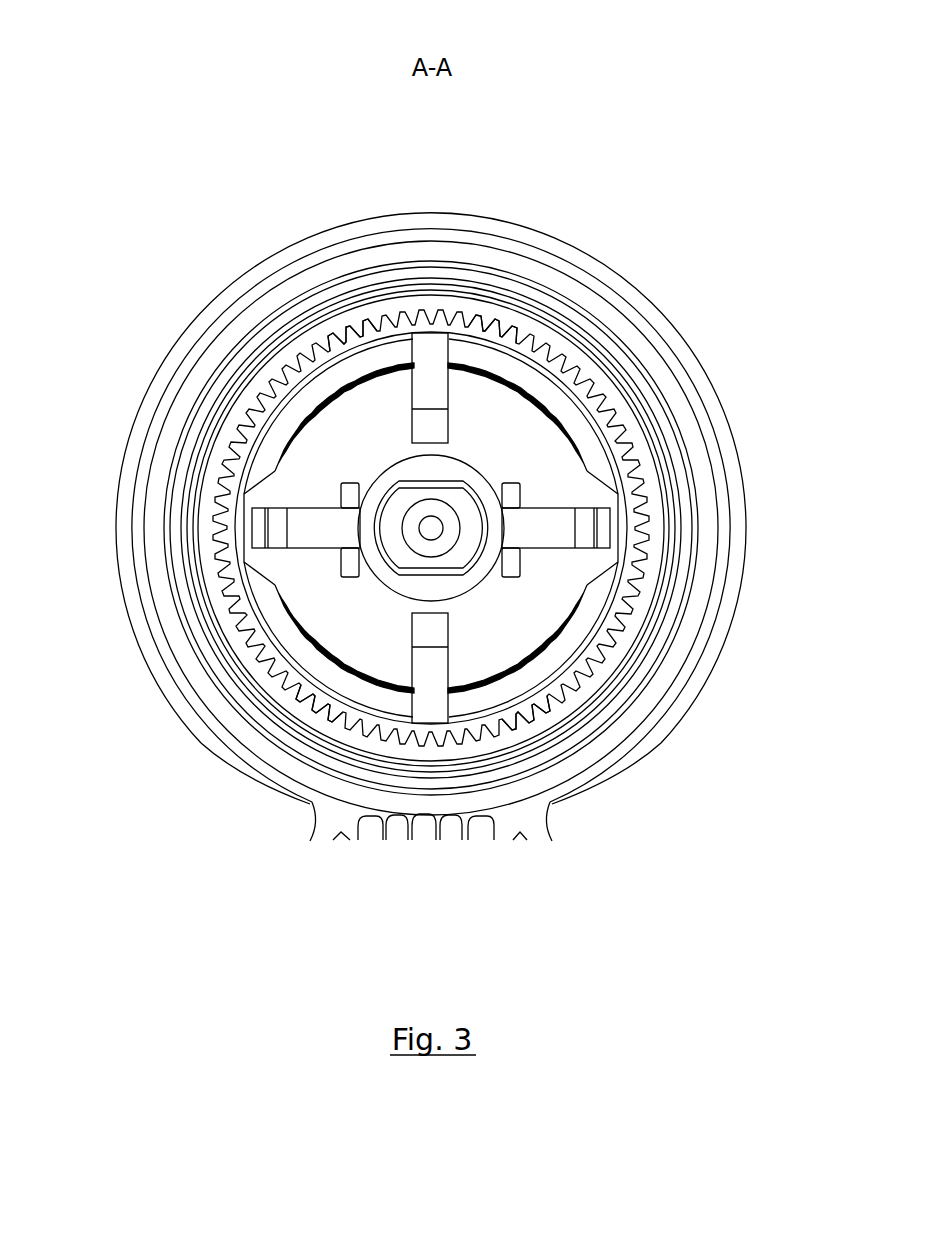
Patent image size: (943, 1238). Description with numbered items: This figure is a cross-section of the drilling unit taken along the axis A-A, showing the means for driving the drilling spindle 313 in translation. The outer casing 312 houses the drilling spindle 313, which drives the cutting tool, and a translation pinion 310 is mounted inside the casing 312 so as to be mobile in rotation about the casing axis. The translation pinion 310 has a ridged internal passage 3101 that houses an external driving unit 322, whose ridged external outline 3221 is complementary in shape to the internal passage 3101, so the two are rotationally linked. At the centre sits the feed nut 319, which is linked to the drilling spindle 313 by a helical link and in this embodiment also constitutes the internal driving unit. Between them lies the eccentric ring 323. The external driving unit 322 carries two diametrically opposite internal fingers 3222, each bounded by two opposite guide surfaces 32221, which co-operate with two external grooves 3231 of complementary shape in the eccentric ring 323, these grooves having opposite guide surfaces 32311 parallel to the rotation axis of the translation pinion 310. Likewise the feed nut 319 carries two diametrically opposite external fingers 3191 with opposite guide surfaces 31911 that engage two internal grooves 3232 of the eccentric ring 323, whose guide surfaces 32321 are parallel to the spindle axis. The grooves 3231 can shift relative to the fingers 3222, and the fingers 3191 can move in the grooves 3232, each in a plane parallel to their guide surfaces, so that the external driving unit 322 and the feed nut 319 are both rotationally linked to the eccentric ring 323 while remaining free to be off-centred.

The translation pinion 310 is at (556, 378).
The ridged internal passage 3101 is at (660, 490).
The casing 312 is at (530, 226).
The drilling spindle 313 is at (295, 480).
The feed nut 319 is at (343, 478).
The external fingers 3191 is at (252, 590).
The guide surfaces 31911 is at (260, 480).
The external driving unit 322 is at (640, 398).
The external outline 3221 is at (641, 530).
The internal fingers 3222 is at (410, 335).
The guide surfaces 32221 is at (362, 320).
The eccentric ring 323 is at (488, 470).
The external grooves 3231 is at (428, 425).
The guide surfaces 32311 is at (322, 345).
The internal grooves 3232 is at (306, 532).
The guide surfaces 32321 is at (247, 492).